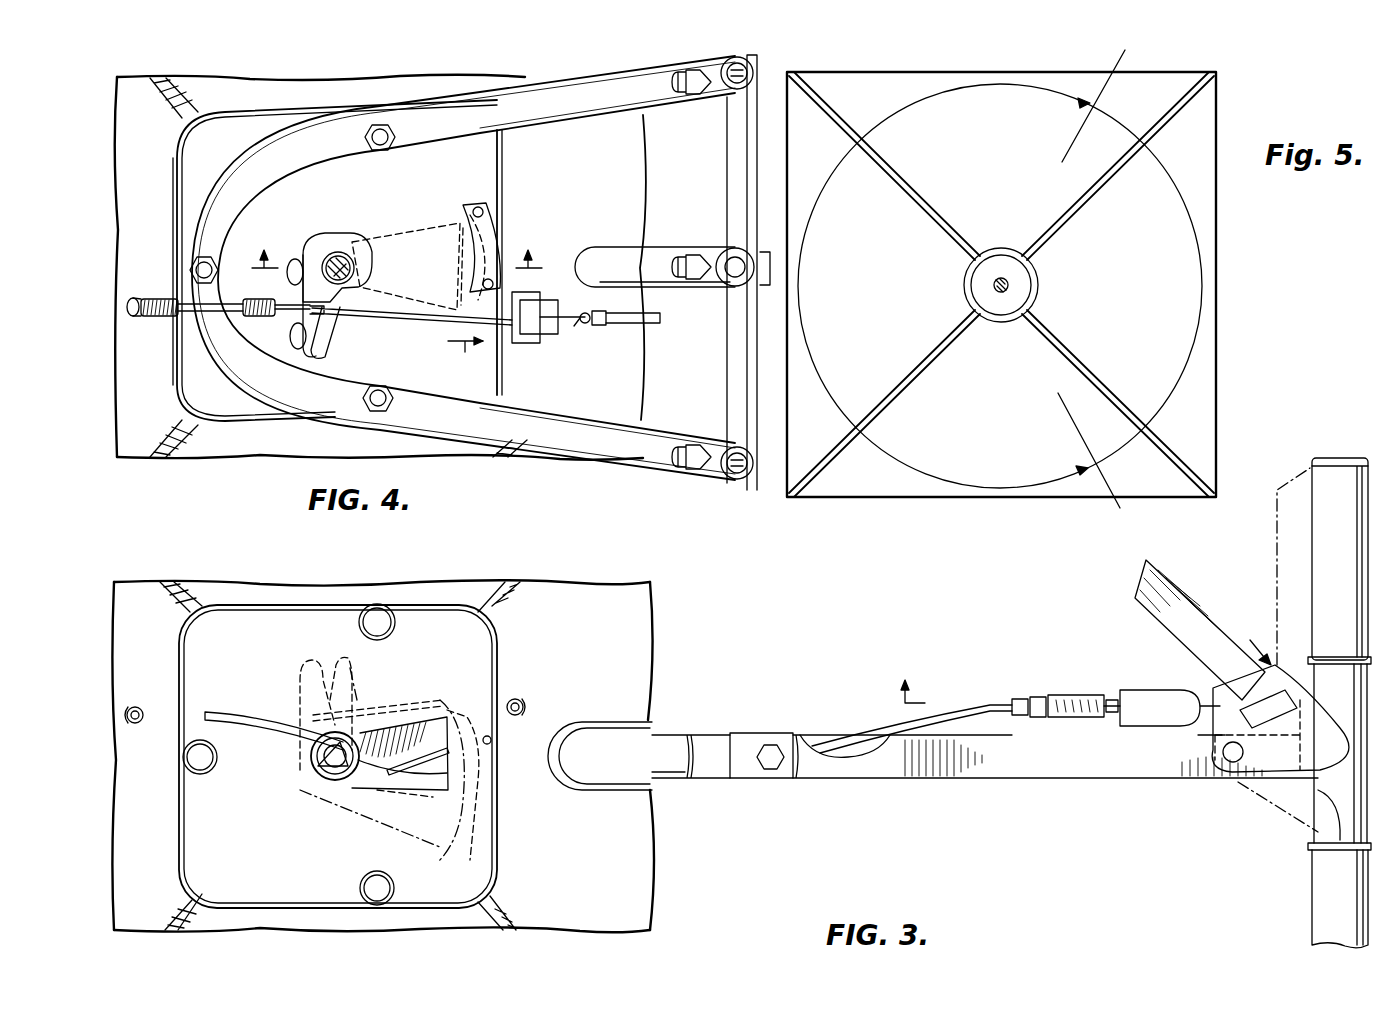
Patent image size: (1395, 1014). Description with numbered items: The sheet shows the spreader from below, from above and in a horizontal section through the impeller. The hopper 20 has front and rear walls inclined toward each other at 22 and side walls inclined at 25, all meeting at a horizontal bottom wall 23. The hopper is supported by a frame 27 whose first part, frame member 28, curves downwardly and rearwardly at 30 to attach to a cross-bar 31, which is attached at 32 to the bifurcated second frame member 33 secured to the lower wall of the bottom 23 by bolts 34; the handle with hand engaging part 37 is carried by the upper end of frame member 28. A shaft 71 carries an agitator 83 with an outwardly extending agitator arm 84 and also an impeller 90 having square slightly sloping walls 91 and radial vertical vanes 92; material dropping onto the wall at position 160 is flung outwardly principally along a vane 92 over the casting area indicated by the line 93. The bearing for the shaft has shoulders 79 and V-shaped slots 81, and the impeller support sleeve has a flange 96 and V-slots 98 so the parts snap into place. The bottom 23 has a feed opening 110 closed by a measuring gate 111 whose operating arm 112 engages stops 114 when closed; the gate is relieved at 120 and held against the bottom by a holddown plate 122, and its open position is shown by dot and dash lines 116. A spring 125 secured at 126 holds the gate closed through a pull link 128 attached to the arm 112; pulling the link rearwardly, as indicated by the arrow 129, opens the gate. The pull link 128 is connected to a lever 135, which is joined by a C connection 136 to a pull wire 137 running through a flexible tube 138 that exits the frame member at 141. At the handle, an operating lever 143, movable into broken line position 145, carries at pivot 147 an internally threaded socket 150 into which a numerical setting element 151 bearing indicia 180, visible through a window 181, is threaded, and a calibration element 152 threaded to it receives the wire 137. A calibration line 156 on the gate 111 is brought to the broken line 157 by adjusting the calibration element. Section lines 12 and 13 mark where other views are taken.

In FIG. 4, the hopper 20 is at (150, 460).
In FIG. 3, the hopper 20 is at (650, 615).
In FIG. 4, the inclined portion of front and rear walls 22 is at (126, 214).
In FIG. 3, the inclined portion of front and rear walls 22 is at (645, 690).
In FIG. 4, the bottom wall 23 is at (337, 260).
In FIG. 3, the bottom wall 23 is at (254, 874).
In FIG. 4, the inclined portion of side walls 25 is at (258, 80).
In FIG. 3, the inclined portion of side walls 25 is at (422, 582).
In FIG. 4, the frame 27 is at (643, 472).
In FIG. 4, the frame member 28 is at (764, 252).
In FIG. 3, the frame member 28 is at (718, 735).
In FIG. 4, the curved portion of frame member 30 is at (614, 242).
In FIG. 4, the cross-bar 31 is at (737, 165).
In FIG. 4, the attachment point 32 is at (750, 76).
In FIG. 4, the second frame member 33 is at (556, 98).
In FIG. 4, the bolts 34 is at (388, 124).
In FIG. 3, the hand engaging part 37 is at (1322, 903).
In FIG. 4, the shaft 71 is at (336, 260).
In FIG. 5, the shaft 71 is at (1003, 280).
In FIG. 4, the shoulders 79 is at (320, 262).
In FIG. 4, the V-shaped slots 81 is at (340, 252).
In FIG. 3, the agitator 83 is at (320, 775).
In FIG. 3, the agitator arm 84 is at (228, 712).
In FIG. 5, the impeller 90 is at (969, 496).
In FIG. 5, the walls of impeller 91 is at (1027, 293).
In FIG. 5, the radial vertical vanes 92 is at (850, 130).
In FIG. 5, the casting area line 93 is at (843, 407).
In FIG. 5, the flange 96 is at (1001, 313).
In FIG. 5, the V-slots 98 is at (964, 300).
In FIG. 4, the feed opening 110 is at (386, 240).
In FIG. 3, the feed opening 110 is at (447, 720).
In FIG. 4, the measuring gate 111 is at (455, 242).
In FIG. 3, the measuring gate 111 is at (416, 832).
In FIG. 4, the operating arm 112 is at (328, 340).
In FIG. 3, the operating arm 112 is at (298, 676).
In FIG. 4, the stops 114 is at (290, 336).
In FIG. 3, the open position of gate 116 is at (355, 672).
In FIG. 4, the relieved portion of gate 120 is at (474, 212).
In FIG. 4, the holddown plate 122 is at (490, 212).
In FIG. 4, the spring 125 is at (170, 298).
In FIG. 4, the spring securing point 126 is at (134, 318).
In FIG. 4, the pull link 128 is at (352, 316).
In FIG. 3, the pull link 128 is at (376, 706).
In FIG. 4, the arrow 129 is at (469, 357).
In FIG. 4, the lever 135 is at (537, 300).
In FIG. 4, the C connection 136 is at (587, 324).
In FIG. 4, the pull wire 137 is at (616, 310).
In FIG. 3, the pull wire 137 is at (990, 705).
In FIG. 4, the flexible tube 138 is at (661, 320).
In FIG. 3, the flexible tube 138 is at (868, 735).
In FIG. 3, the exit point 141 is at (830, 745).
In FIG. 3, the operating lever 143 is at (1192, 636).
In FIG. 3, the broken line position of operating lever 145 is at (1275, 552).
In FIG. 3, the pivotal connection 147 is at (1225, 714).
In FIG. 3, the internally threaded socket 150 is at (1138, 690).
In FIG. 3, the numerical setting element 151 is at (1068, 695).
In FIG. 3, the calibration element 152 is at (1036, 697).
In FIG. 3, the calibration line 156 is at (455, 776).
In FIG. 3, the broken line 157 is at (392, 810).
In FIG. 5, the material feed position 160 is at (1118, 281).
In FIG. 3, the measuring gate position indicia 180 is at (1090, 718).
In FIG. 3, the window 181 is at (1114, 718).
In FIG. 3, the section line 12- 12 is at (1085, 650).
In FIG. 4, the section line 13- 13 is at (407, 234).